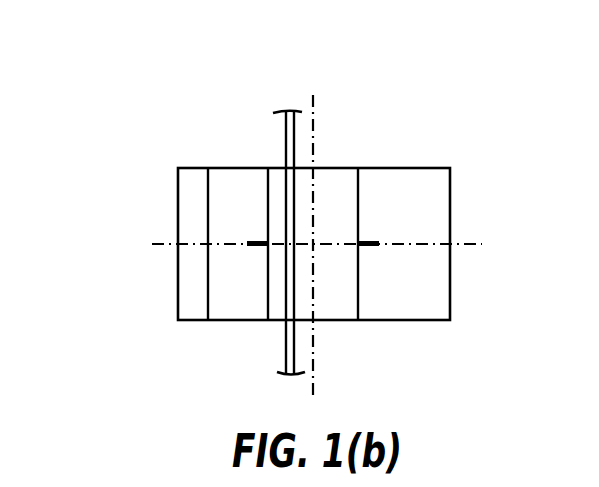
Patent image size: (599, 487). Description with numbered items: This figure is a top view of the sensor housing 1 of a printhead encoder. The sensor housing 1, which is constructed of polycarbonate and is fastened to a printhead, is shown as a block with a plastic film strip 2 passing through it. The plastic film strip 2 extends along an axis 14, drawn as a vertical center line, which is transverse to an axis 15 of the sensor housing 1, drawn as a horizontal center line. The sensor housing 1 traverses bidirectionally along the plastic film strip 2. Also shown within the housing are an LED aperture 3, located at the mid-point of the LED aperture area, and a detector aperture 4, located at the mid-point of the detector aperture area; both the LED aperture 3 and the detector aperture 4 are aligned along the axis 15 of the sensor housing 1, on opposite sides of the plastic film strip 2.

The sensor housing 1 is at (422, 280).
The plastic film strip 2 is at (283, 135).
The LED aperture 3 is at (247, 240).
The detector aperture 4 is at (377, 244).
The axis 14 is at (322, 126).
The axis 15 is at (163, 249).